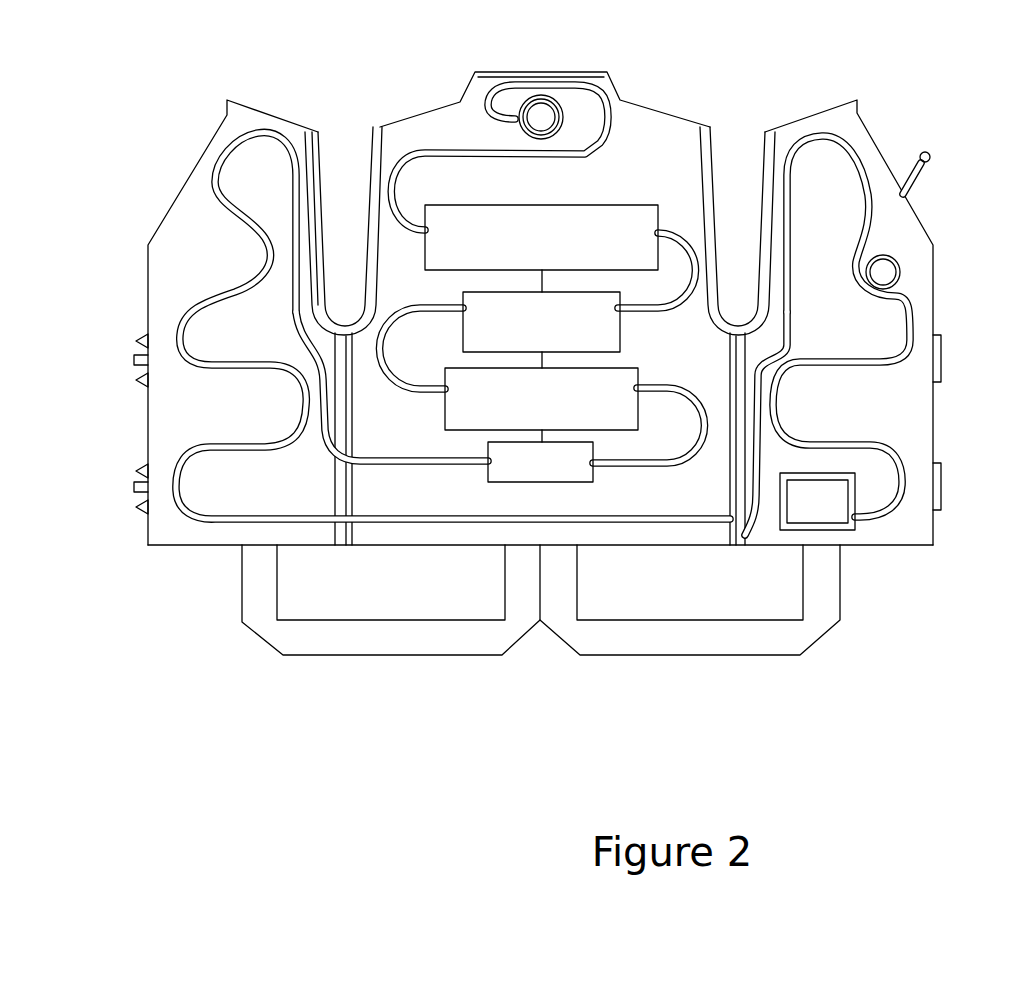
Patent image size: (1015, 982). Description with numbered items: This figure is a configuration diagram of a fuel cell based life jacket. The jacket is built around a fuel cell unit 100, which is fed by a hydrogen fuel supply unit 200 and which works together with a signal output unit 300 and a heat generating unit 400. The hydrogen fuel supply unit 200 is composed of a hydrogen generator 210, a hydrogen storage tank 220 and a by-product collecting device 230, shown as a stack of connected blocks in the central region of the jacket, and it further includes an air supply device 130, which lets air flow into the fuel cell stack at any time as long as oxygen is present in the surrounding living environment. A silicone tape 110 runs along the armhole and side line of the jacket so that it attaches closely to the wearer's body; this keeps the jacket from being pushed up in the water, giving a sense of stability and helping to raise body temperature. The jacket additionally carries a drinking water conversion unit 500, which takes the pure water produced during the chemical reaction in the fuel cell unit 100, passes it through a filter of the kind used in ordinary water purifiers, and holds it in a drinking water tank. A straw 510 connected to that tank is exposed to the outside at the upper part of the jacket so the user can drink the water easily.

The fuel cell unit 100 is at (587, 205).
The silicone tape 110 is at (705, 173).
The air supply device 130 is at (541, 116).
The hydrogen fuel supply unit 200 is at (720, 795).
The hydrogen generator 210 is at (637, 405).
The hydrogen storage tank 220 is at (620, 322).
The by-product collecting device 230 is at (578, 483).
The signal output unit 300 is at (426, 116).
The heat generating unit 400 is at (857, 490).
The drinking water conversion unit 500 is at (880, 266).
The straw 510 is at (929, 155).